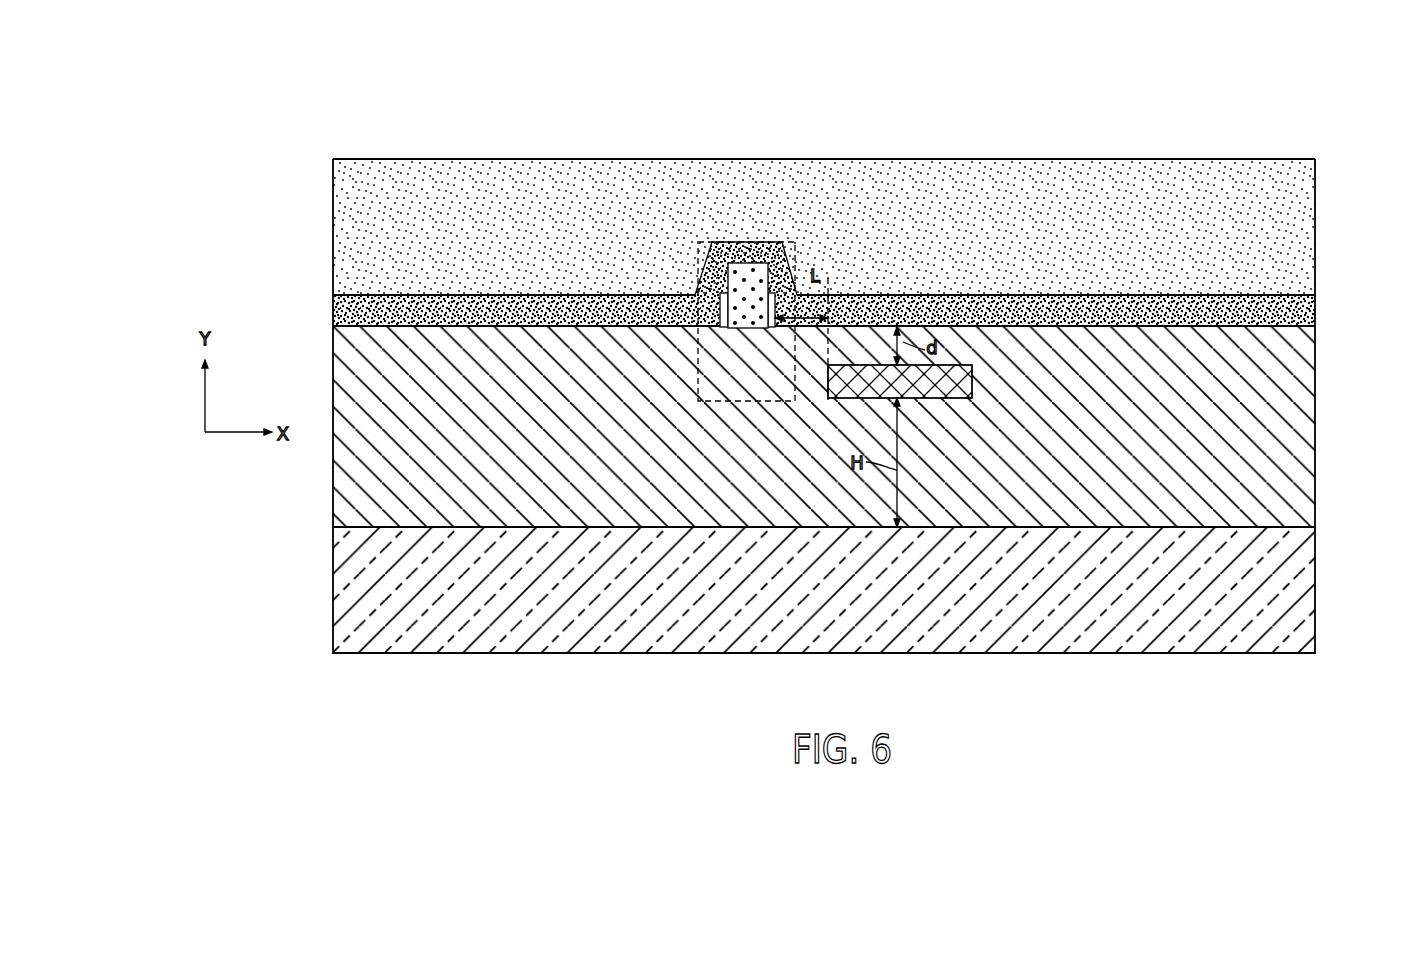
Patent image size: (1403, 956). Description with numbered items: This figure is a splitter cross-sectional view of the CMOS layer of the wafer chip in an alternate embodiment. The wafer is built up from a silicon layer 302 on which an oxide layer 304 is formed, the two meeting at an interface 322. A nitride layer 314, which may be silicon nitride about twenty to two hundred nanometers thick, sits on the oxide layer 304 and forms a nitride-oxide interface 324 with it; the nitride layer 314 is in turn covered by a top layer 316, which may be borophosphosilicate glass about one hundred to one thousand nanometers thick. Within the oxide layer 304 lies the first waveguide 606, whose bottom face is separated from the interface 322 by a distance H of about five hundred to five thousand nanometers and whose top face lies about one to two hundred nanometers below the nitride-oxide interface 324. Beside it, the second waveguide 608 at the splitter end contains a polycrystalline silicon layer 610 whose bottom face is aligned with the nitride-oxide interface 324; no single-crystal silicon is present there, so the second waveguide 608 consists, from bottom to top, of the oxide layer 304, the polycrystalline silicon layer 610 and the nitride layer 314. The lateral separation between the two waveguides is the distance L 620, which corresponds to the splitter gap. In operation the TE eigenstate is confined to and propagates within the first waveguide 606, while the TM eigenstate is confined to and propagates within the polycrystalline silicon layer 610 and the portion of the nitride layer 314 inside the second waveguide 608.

The silicon layer 302 is at (1105, 640).
The oxide layer 304 is at (1305, 430).
The nitride layer 314 is at (1283, 306).
The top layer 316 is at (1297, 248).
The interface 322 is at (1315, 527).
The nitride-oxide interface 324 is at (1313, 322).
The first waveguide 606 is at (947, 387).
The second waveguide 608 is at (682, 364).
The polycrystalline silicon layer 610 is at (745, 267).
The distance L 620 is at (802, 293).